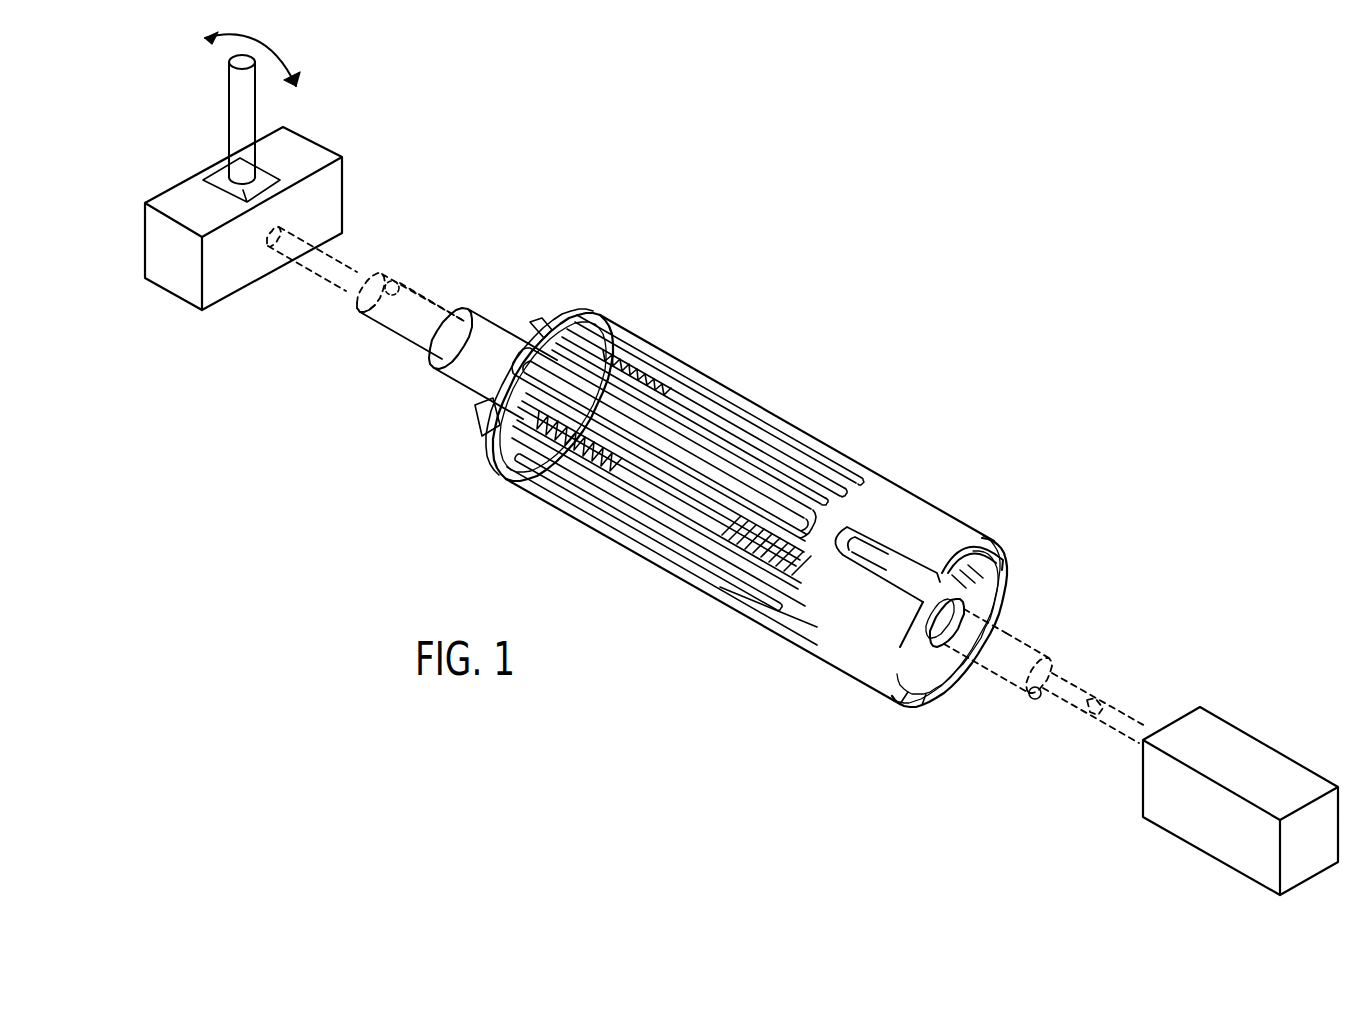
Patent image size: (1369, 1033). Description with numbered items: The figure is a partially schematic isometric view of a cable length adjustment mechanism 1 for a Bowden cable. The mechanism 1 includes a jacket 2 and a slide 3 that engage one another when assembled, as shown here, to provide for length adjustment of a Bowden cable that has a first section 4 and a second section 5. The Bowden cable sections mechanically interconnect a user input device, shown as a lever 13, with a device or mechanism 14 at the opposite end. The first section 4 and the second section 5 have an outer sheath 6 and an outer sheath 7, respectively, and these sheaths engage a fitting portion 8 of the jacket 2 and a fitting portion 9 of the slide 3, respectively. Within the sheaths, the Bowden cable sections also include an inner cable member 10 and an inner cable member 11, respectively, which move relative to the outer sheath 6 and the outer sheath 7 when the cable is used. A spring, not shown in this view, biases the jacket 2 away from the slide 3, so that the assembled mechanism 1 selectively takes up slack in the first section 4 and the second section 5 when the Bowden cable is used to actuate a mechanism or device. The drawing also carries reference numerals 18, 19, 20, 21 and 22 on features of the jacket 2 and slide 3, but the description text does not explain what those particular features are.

The cable length adjustment mechanism 1 is at (752, 379).
The jacket 2 is at (1003, 552).
The slide 3 is at (487, 325).
The first section 4 is at (1030, 634).
The second section 5 is at (420, 292).
The outer sheath 6 is at (1044, 646).
The outer sheath 7 is at (437, 305).
The fitting portion 8 is at (1000, 572).
The fitting portion 9 is at (460, 373).
The inner cable member 10 is at (1090, 700).
The inner cable member 11 is at (358, 268).
The lever 13 is at (240, 135).
The device or mechanism 14 is at (1138, 788).
The slots 18 is at (684, 372).
The openings 19 is at (884, 558).
The sleeve 20 is at (925, 522).
The end ring 21 is at (636, 332).
The ratchet springs 22 is at (866, 487).